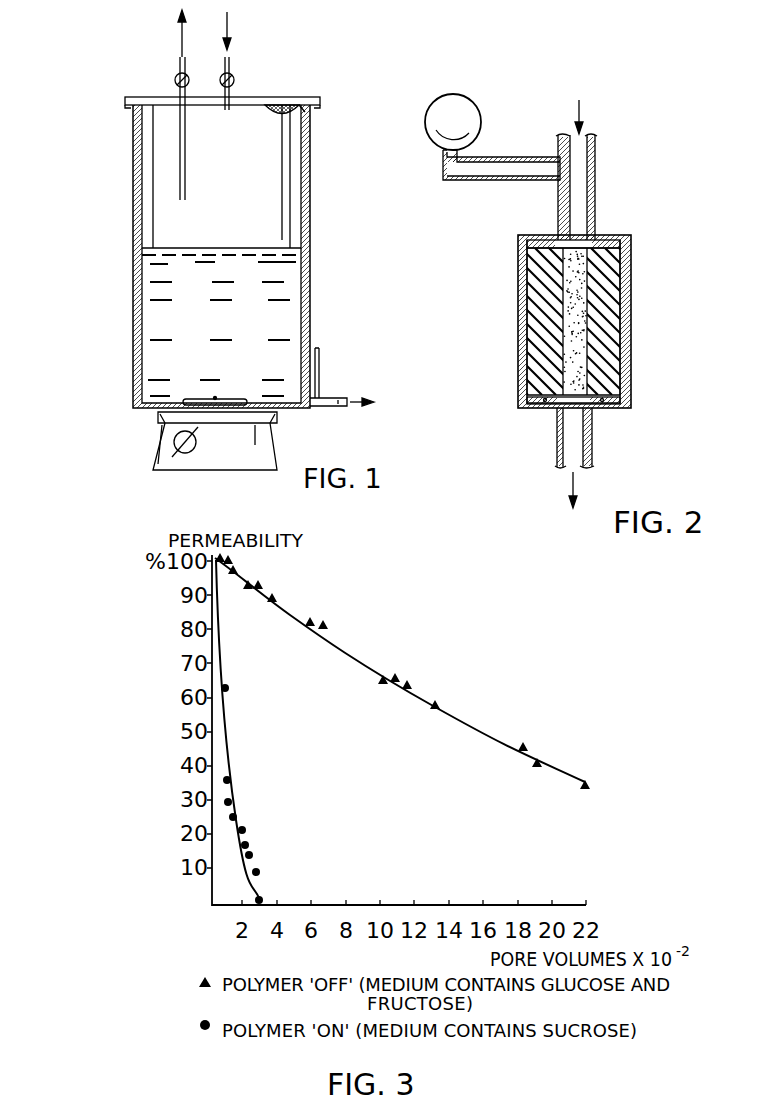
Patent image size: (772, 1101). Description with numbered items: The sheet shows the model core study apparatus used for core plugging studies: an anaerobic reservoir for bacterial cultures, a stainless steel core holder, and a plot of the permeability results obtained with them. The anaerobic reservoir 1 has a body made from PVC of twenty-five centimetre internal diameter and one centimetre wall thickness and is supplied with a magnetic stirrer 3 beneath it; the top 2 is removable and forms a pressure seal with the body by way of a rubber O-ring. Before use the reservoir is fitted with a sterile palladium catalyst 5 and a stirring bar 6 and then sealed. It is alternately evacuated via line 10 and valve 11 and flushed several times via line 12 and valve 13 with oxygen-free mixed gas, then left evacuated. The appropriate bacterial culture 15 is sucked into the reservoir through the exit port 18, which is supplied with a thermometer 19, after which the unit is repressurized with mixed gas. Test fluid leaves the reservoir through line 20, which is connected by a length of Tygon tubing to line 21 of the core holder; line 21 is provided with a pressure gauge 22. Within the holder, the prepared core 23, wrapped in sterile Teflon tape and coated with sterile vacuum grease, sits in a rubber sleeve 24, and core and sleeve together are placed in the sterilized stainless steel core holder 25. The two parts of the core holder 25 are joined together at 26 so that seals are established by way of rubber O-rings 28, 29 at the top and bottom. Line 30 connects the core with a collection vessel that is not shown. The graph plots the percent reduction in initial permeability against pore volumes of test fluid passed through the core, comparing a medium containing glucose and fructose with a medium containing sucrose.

In FIG. 1, the anaerobic reservoir 1 is at (310, 228).
In FIG. 1, the top 2 is at (125, 100).
In FIG. 1, the magnetic stirrer 3 is at (160, 440).
In FIG. 1, the palladium catalyst 5 is at (309, 125).
In FIG. 1, the stirring bar 6 is at (182, 401).
In FIG. 1, the line 10 is at (180, 35).
In FIG. 1, the valve 11 is at (175, 80).
In FIG. 1, the line 12 is at (230, 30).
In FIG. 1, the valve 13 is at (234, 80).
In FIG. 1, the bacterial culture 15 is at (287, 293).
In FIG. 1, the exit port 18 is at (323, 408).
In FIG. 1, the thermometer 19 is at (321, 366).
In FIG. 1, the line 20 is at (377, 404).
In FIG. 2, the line 21 is at (597, 160).
In FIG. 2, the pressure gauge 22 is at (482, 128).
In FIG. 2, the core 23 is at (576, 373).
In FIG. 2, the rubber sleeve 24 is at (615, 300).
In FIG. 2, the core holder 25 is at (518, 258).
In FIG. 2, the joint 26 is at (620, 335).
In FIG. 2, the rubber O-ring 28 is at (620, 235).
In FIG. 2, the rubber O-ring 29 is at (612, 410).
In FIG. 2, the line 30 is at (556, 440).